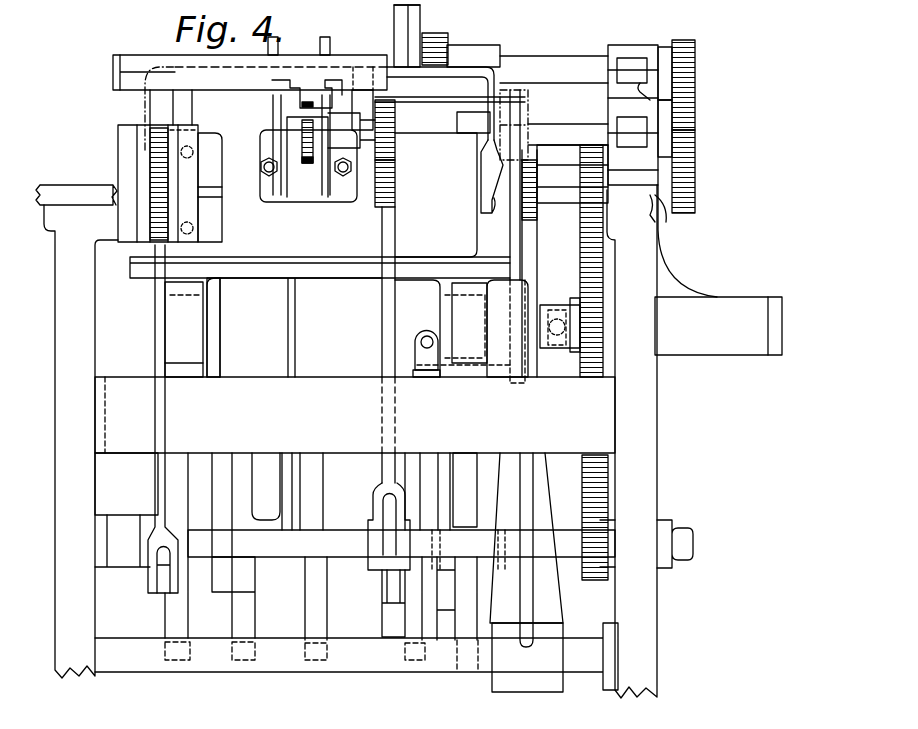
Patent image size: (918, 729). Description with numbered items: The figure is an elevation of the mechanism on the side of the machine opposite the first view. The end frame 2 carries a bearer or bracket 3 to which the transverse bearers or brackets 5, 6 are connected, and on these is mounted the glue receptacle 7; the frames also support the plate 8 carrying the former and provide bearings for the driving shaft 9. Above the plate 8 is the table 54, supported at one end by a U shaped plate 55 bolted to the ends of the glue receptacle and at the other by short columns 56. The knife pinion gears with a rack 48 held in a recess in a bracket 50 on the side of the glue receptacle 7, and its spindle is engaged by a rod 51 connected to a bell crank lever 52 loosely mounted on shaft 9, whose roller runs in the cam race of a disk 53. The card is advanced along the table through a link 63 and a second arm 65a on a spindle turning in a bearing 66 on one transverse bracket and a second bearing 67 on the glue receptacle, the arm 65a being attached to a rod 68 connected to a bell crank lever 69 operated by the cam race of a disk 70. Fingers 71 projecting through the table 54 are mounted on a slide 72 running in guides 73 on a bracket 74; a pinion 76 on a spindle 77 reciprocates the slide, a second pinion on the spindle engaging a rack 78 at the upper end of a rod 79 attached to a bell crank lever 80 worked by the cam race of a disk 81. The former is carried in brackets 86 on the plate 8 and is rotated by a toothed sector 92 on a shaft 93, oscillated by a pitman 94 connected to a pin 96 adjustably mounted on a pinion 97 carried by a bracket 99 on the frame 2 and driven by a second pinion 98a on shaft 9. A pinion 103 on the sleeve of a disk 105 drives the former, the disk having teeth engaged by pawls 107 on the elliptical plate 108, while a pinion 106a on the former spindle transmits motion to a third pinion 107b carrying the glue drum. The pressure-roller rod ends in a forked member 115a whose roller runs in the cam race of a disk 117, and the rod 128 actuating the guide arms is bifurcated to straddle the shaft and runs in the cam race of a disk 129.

The end frame 2 is at (364, 377).
The bearer or bracket 3 is at (355, 415).
The transverse bearer or bracket 5 is at (184, 329).
The transverse bearer or bracket 6 is at (465, 324).
The glue receptacle 7 is at (337, 195).
The plate 8 is at (686, 241).
The shaft 9 is at (401, 550).
The rack 48 is at (150, 155).
The bracket 50 is at (200, 192).
The rod 51 is at (126, 510).
The bell crank lever 52 is at (160, 587).
The disk 53 is at (177, 626).
The table 54 is at (163, 56).
The U shaped plate 55 is at (144, 109).
The short columns 56 is at (185, 110).
The link 63 is at (411, 100).
The second arm 65a is at (512, 382).
The bearing 66 is at (507, 328).
The bearing 67 is at (492, 190).
The rod 68 is at (417, 328).
The bell crank lever 69 is at (443, 453).
The disk 70 is at (465, 490).
The fingers 71 is at (318, 43).
The slide 72 is at (307, 93).
The guides 73 is at (280, 99).
The bracket 74 is at (312, 166).
The pinion 76 is at (302, 203).
The spindle 77 is at (390, 140).
The rack 78 is at (393, 185).
The rod 79 is at (382, 358).
The bell crank lever 80 is at (387, 513).
The disk 81 is at (418, 632).
The brackets 86 is at (489, 49).
The toothed sector 92 is at (533, 253).
The shaft 93 is at (441, 656).
The pitman 94 is at (558, 347).
The pin 96 is at (555, 305).
The pinion 97 is at (572, 261).
The second pinion 98a is at (596, 582).
The bracket 99 is at (718, 326).
The pinion 103 is at (449, 40).
The disk 105 is at (394, 38).
The pinion 106a is at (696, 62).
The pawls 107 is at (394, 19).
The third pinion 107b is at (696, 170).
The elliptical plate 108 is at (421, 24).
The forked member 115a is at (214, 368).
The disk 117 is at (246, 482).
The rod 128 is at (291, 345).
The disk 129 is at (322, 484).